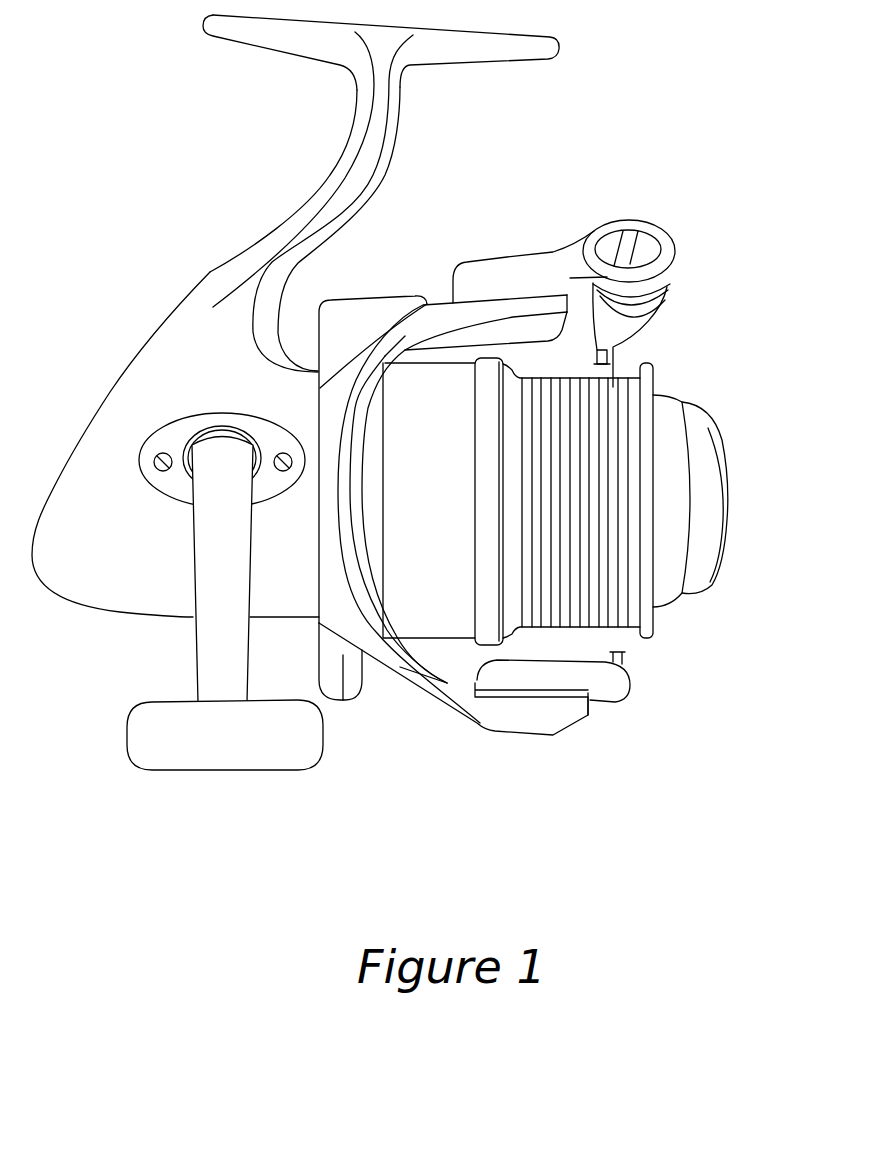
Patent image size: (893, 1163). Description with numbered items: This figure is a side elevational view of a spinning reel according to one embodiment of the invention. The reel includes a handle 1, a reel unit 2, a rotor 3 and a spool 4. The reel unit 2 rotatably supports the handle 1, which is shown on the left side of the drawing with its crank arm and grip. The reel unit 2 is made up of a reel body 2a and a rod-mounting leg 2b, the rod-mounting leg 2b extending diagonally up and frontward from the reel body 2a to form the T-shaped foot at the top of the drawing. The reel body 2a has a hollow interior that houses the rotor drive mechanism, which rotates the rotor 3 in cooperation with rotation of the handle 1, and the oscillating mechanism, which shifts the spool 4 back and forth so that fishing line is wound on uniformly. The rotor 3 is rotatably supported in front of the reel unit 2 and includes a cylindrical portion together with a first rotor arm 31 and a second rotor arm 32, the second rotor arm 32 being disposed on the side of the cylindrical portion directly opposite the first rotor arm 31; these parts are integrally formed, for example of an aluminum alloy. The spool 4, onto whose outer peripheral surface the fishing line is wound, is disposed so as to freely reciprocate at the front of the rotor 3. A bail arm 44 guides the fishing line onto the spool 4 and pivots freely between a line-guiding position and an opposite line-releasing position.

The handle 1 is at (220, 650).
The reel unit 2 is at (133, 359).
The reel body 2a is at (113, 420).
The rod-mounting leg 2b is at (210, 272).
The rotor 3 is at (373, 293).
The first rotor arm 31 is at (490, 310).
The second rotor arm 32 is at (502, 713).
The spool 4 is at (613, 388).
The bail arm 44 is at (687, 280).